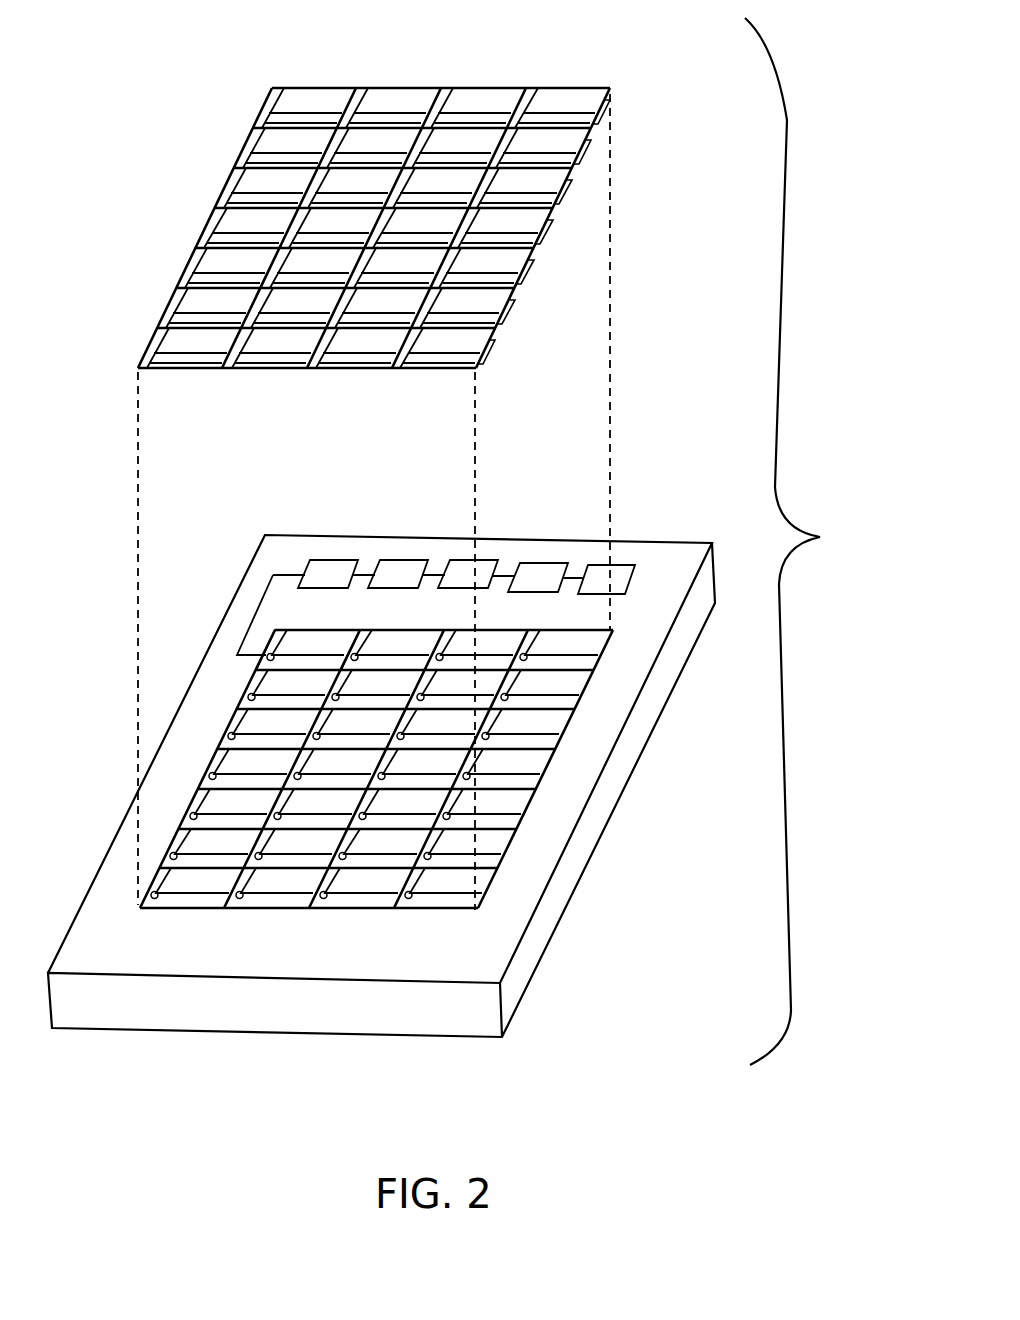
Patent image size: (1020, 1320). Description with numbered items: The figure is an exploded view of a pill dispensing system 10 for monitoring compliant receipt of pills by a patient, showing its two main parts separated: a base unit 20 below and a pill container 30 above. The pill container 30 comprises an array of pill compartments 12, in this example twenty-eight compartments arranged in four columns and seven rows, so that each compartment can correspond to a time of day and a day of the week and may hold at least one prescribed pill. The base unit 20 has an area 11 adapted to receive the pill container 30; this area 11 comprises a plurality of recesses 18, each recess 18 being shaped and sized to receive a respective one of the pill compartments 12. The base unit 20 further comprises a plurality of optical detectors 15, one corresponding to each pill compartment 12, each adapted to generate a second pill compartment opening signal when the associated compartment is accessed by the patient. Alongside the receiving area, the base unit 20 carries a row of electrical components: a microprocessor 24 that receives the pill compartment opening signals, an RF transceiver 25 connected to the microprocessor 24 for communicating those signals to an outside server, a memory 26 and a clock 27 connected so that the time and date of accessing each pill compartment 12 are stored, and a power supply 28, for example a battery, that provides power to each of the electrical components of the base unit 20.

The pill dispensing system 10 is at (801, 541).
The area 11 is at (182, 912).
The pill compartments 12 is at (305, 118).
The optical detectors 15 is at (273, 653).
The recesses 18 is at (297, 658).
The base unit 20 is at (588, 800).
The microprocessor 24 is at (333, 560).
The RF transceiver 25 is at (400, 560).
The memory 26 is at (465, 560).
The clock 27 is at (540, 563).
The power supply 28 is at (622, 566).
The pill container 30 is at (547, 241).